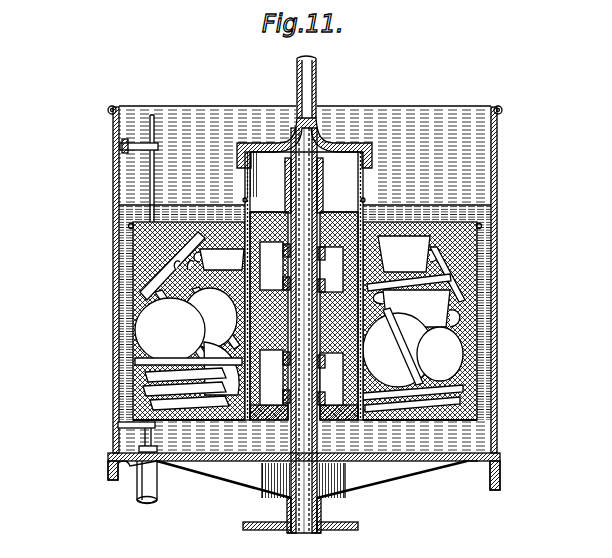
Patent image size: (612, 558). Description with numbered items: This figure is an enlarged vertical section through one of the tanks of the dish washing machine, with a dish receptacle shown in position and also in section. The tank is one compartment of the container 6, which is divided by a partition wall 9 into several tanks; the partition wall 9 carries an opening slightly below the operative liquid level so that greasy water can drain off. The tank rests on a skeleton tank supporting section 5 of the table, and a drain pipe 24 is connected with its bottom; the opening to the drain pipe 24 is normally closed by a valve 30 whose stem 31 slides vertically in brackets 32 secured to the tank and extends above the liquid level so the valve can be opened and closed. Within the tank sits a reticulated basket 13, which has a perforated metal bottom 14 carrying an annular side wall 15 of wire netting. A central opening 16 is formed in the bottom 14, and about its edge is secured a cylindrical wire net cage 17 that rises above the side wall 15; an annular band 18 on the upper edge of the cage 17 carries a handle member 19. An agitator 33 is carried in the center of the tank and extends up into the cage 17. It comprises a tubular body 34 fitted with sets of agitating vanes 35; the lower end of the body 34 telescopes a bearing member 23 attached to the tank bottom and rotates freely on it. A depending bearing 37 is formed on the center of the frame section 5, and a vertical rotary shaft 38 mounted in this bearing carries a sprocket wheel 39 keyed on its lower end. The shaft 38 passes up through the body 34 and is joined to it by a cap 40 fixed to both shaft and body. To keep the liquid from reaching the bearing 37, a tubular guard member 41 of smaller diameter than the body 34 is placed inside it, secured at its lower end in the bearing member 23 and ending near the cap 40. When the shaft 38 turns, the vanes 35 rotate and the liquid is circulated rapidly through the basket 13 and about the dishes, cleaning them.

The tank supporting section 5 is at (460, 462).
The container 6 is at (496, 191).
The partition wall 9 is at (476, 166).
The reticulated basket 13 is at (470, 408).
The perforated metal bottom 14 is at (227, 418).
The side wall 15 is at (160, 262).
The central opening 16 is at (260, 423).
The wire net cage 17 is at (364, 207).
The annular band 18 is at (366, 183).
The handle member 19 is at (314, 82).
The bearing member 23 is at (342, 453).
The drain pipe 24 is at (140, 489).
The valve 30 is at (140, 450).
The valve stem 31 is at (150, 190).
The bracket 32 is at (123, 147).
The agitator 33 is at (363, 173).
The tubular body 34 is at (335, 189).
The agitating vanes 35 is at (332, 262).
The depending bearing 37 is at (313, 507).
The vertical rotary shaft 38 is at (288, 504).
The sprocket wheel 39 is at (300, 505).
The cap 40 is at (290, 150).
The tubular guard member 41 is at (289, 186).